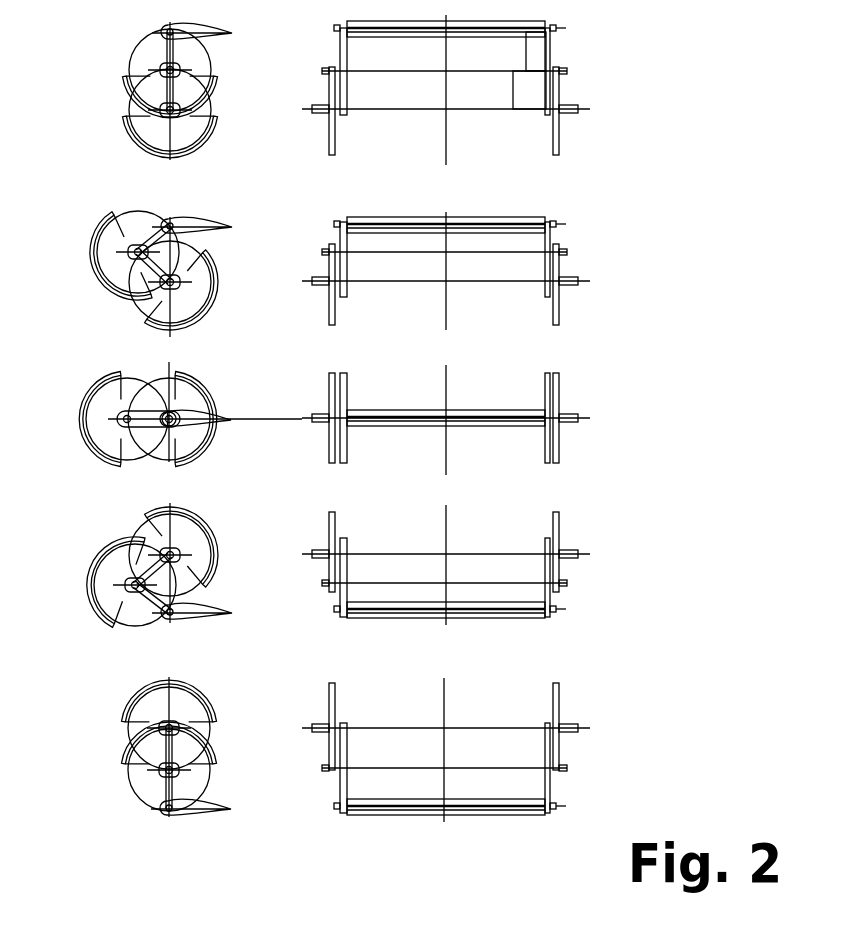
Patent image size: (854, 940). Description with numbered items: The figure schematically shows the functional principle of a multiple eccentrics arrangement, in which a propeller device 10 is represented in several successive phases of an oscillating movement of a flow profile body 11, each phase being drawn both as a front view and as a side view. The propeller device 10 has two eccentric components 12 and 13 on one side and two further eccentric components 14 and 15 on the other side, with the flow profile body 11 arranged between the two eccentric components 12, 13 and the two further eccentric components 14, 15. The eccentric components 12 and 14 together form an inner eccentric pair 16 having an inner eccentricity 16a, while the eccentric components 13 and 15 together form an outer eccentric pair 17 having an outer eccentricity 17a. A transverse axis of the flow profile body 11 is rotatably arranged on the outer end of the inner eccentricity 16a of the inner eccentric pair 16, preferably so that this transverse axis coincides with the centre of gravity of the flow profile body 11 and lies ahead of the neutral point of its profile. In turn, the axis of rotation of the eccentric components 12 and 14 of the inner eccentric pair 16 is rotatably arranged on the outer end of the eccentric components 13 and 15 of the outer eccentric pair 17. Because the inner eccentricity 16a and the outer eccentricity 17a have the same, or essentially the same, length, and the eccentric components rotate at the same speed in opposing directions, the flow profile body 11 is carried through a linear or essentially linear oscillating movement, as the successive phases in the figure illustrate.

The propeller device 10 is at (540, 12).
The flow profile body 11 is at (205, 22).
The eccentric component 12 is at (127, 83).
The eccentric component 13 is at (128, 132).
The further eccentric component 14 is at (552, 50).
The further eccentric component 15 is at (562, 97).
The inner eccentric pair 16 is at (542, 107).
The inner eccentricity 16a is at (526, 48).
The outer eccentric pair 17 is at (552, 145).
The outer eccentricity 17a is at (513, 88).